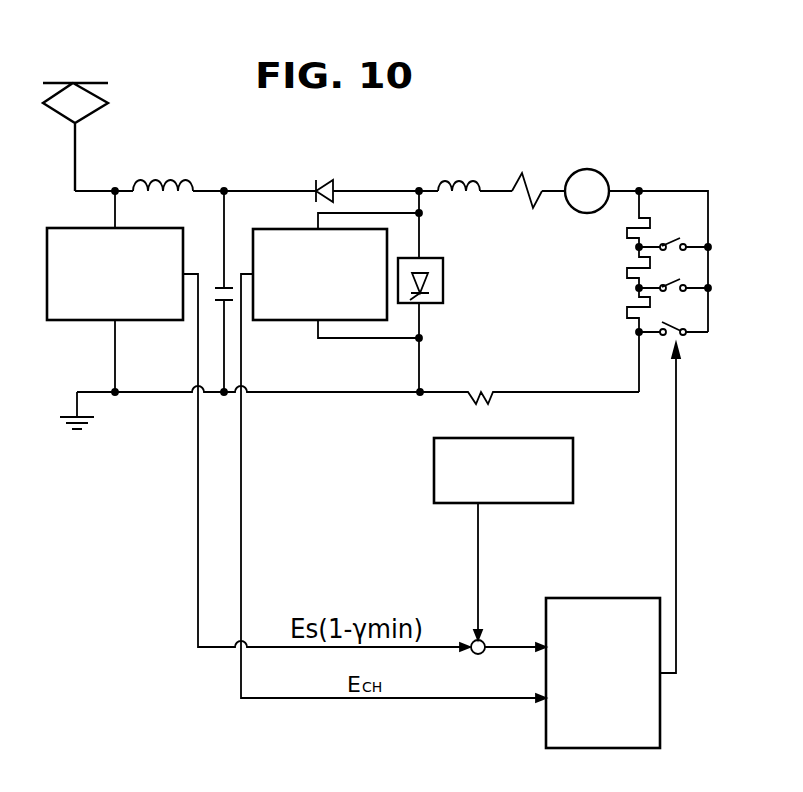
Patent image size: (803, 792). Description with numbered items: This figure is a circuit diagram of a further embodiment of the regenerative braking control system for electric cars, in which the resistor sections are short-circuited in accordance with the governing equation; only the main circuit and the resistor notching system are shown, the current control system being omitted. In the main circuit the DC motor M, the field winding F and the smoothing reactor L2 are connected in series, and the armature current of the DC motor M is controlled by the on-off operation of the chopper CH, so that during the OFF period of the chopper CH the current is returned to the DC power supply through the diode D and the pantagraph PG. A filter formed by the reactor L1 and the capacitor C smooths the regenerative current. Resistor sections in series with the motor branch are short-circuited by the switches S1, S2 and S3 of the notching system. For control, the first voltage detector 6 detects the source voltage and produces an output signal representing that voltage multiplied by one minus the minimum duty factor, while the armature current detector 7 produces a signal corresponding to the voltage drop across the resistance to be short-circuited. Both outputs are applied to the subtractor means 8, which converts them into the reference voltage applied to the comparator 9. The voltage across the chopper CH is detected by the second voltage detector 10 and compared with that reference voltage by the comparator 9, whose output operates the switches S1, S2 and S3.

The first voltage detector 6 is at (90, 322).
The armature current detector 7 is at (433, 472).
The subtractor means 8 is at (483, 653).
The comparator 9 is at (613, 598).
The second voltage detector 10 is at (281, 228).
The pantagraph PG is at (96, 111).
The reactor L1 is at (174, 181).
The capacitor C is at (213, 287).
The diode D is at (318, 180).
The chopper CH is at (443, 290).
The smoothing reactor L2 is at (457, 183).
The field winding F is at (528, 184).
The DC motor M is at (602, 175).
The switch S1 is at (675, 241).
The switch S2 is at (672, 281).
The switch S3 is at (666, 327).